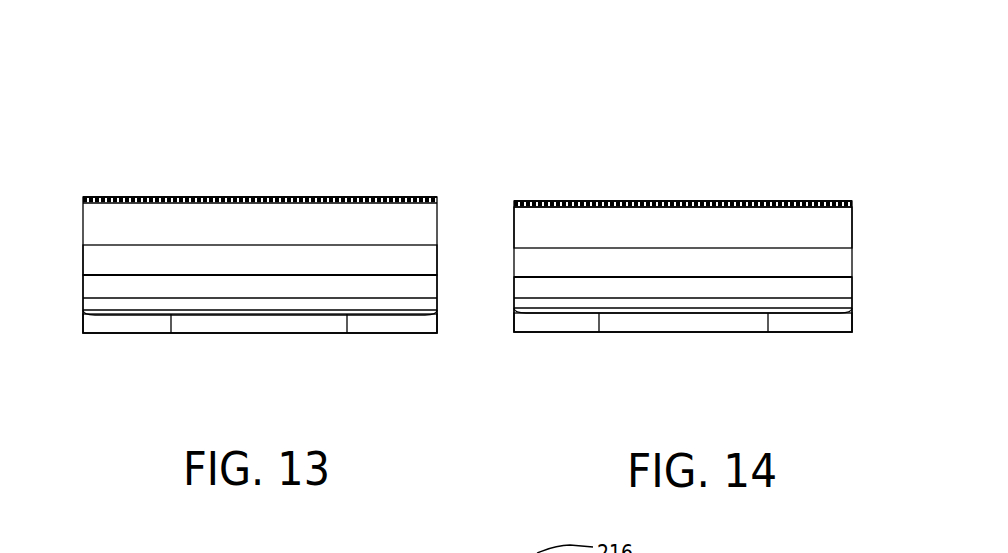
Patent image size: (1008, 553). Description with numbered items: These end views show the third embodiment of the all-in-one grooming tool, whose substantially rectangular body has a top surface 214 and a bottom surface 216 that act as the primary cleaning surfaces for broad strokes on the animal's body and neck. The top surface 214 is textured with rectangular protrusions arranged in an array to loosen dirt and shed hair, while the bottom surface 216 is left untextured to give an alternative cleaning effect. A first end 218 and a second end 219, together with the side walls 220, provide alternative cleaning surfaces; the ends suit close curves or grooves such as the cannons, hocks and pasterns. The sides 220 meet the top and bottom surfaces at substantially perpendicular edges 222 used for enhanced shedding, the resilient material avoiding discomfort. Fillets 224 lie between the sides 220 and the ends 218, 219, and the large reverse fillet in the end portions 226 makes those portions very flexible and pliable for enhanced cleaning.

In FIG. 13, the top surface 214 is at (228, 197).
In FIG. 14, the top surface 214 is at (739, 210).
In FIG. 13, the bottom surface 216 is at (315, 333).
In FIG. 14, the bottom surface 216 is at (578, 332).
In FIG. 13, the first end 218 is at (254, 265).
In FIG. 14, the second end 219 is at (701, 248).
In FIG. 13, the side walls 220 is at (83, 273).
In FIG. 14, the side walls 220 is at (514, 277).
In FIG. 13, the edges 222 is at (83, 197).
In FIG. 14, the edges 222 is at (515, 202).
In FIG. 13, the fillets 224 is at (118, 282).
In FIG. 14, the fillets 224 is at (683, 305).
In FIG. 13, the end portions 226 is at (170, 197).
In FIG. 14, the end portions 226 is at (558, 202).